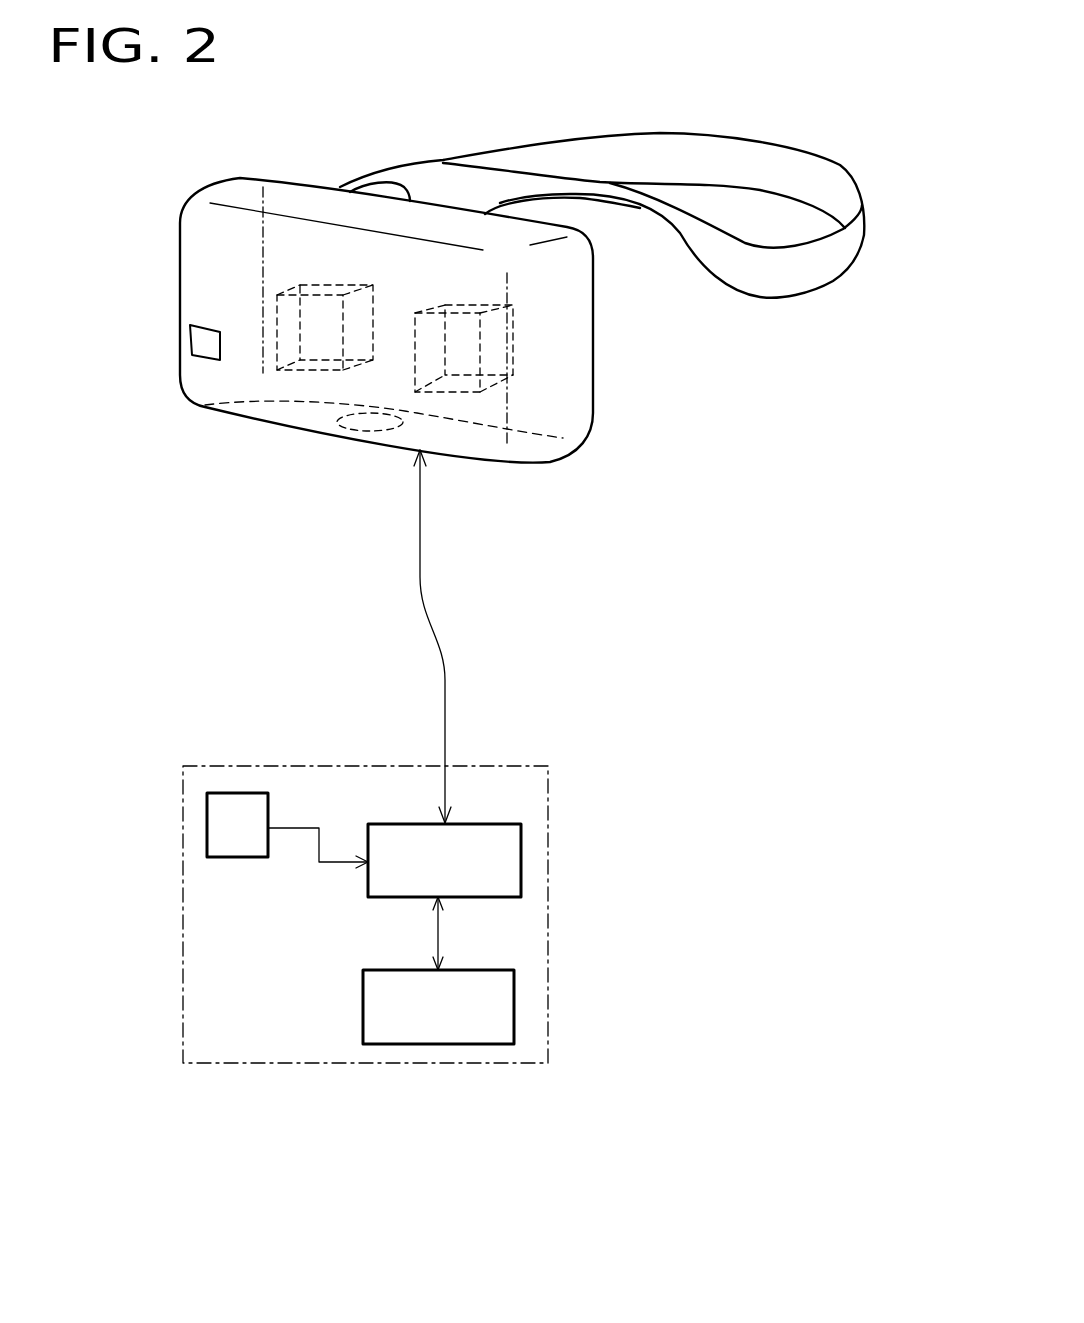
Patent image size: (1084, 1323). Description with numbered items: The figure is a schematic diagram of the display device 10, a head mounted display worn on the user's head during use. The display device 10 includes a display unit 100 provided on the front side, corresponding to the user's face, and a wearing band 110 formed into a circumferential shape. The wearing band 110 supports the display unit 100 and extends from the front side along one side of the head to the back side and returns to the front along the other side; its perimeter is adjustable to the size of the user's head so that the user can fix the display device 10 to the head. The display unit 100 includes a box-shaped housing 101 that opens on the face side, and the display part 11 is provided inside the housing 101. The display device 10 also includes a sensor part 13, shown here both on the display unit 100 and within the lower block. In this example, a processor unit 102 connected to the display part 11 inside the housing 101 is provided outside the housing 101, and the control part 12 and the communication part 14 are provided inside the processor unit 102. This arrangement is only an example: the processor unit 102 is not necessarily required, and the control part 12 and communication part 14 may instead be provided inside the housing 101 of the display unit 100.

The display device 10 is at (680, 1038).
The display unit 100 is at (678, 440).
The housing 101 is at (540, 440).
The wearing band 110 is at (820, 265).
The display part 11 is at (283, 273).
The sensor part 13 is at (202, 344).
The processor unit 102 is at (245, 1063).
The control part 12 is at (521, 850).
The communication part 14 is at (514, 1000).